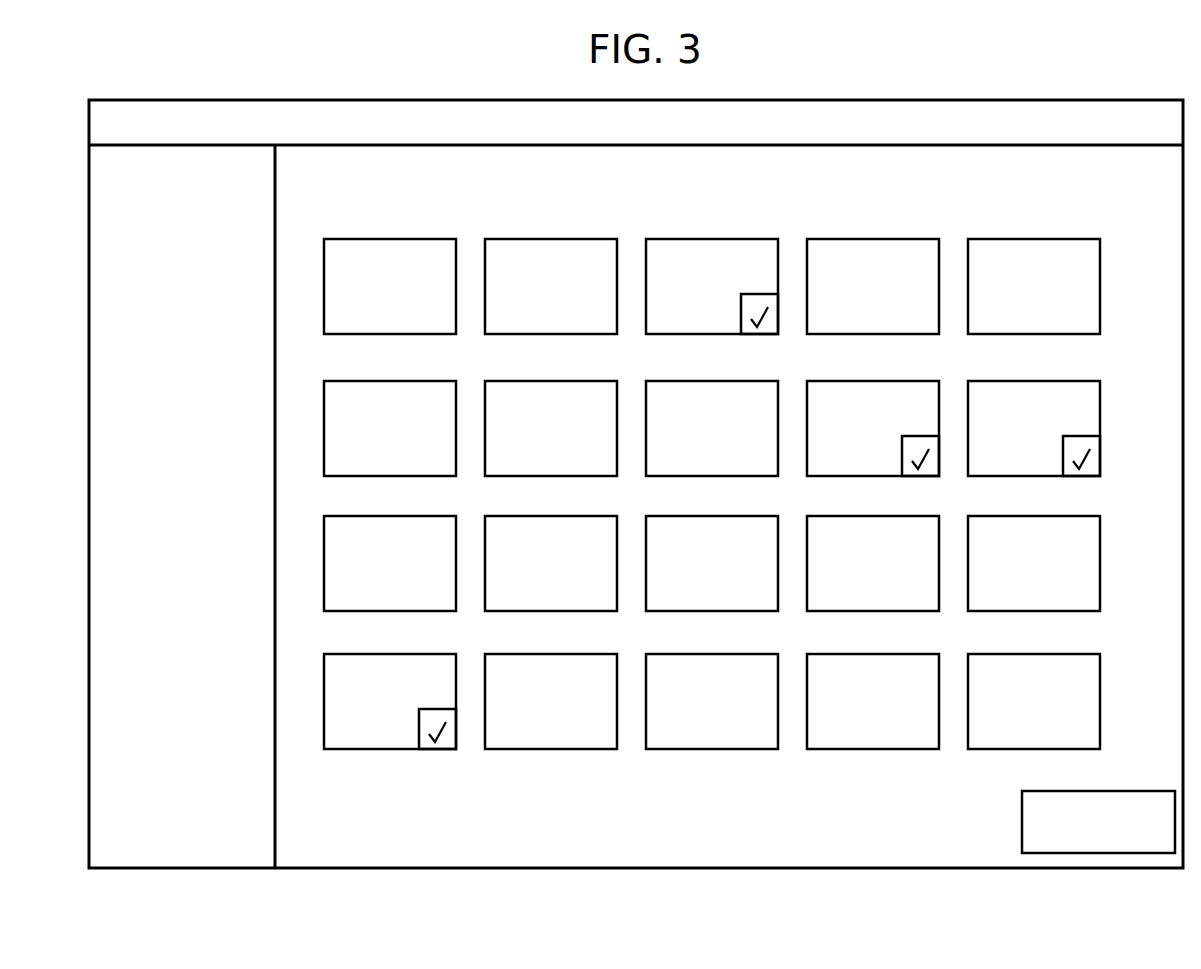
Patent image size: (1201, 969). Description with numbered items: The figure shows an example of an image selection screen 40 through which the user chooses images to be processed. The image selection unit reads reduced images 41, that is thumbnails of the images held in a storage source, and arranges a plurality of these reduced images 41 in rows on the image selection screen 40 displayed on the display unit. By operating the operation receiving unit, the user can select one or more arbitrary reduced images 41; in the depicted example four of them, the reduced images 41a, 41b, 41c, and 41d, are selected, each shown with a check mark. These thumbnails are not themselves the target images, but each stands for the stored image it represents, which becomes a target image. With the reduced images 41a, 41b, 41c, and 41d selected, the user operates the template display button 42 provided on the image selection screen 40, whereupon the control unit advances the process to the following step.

The image selection screen 40 is at (703, 100).
The reduced image 41 is at (735, 471).
The selected reduced image 41a is at (718, 239).
The selected reduced image 41b is at (868, 381).
The selected reduced image 41c is at (1028, 381).
The selected reduced image 41d is at (385, 654).
The template display button 42 is at (1081, 853).